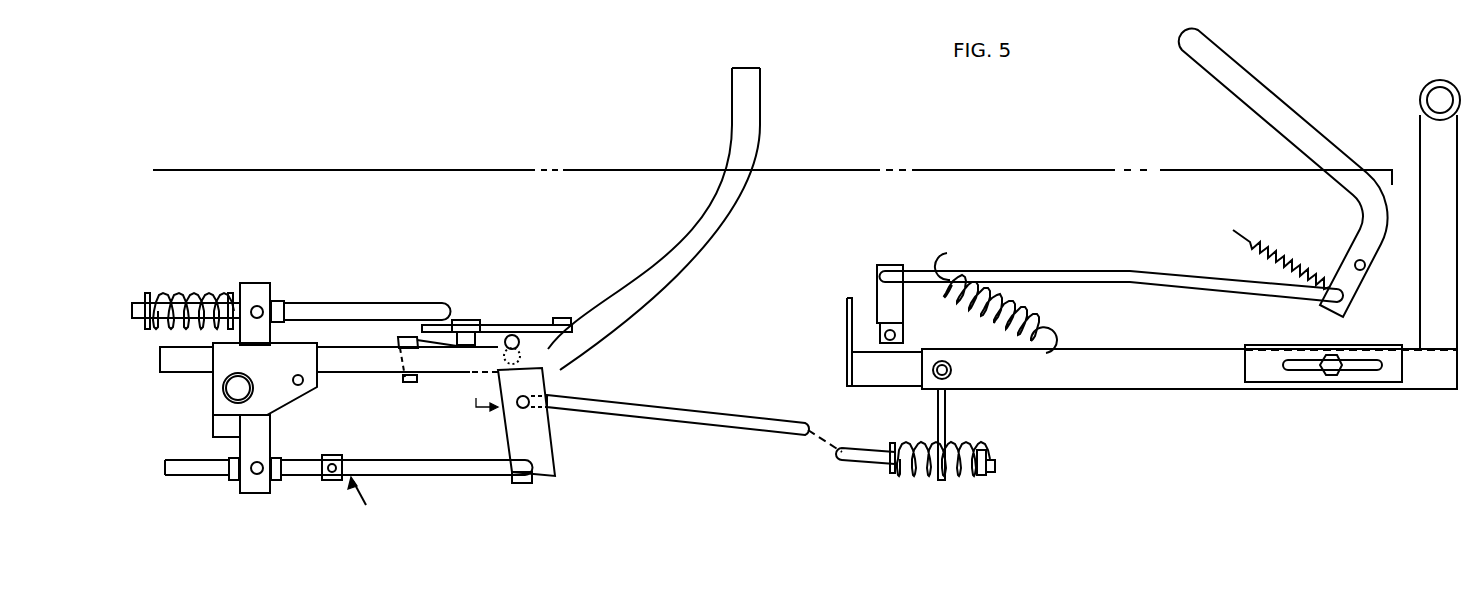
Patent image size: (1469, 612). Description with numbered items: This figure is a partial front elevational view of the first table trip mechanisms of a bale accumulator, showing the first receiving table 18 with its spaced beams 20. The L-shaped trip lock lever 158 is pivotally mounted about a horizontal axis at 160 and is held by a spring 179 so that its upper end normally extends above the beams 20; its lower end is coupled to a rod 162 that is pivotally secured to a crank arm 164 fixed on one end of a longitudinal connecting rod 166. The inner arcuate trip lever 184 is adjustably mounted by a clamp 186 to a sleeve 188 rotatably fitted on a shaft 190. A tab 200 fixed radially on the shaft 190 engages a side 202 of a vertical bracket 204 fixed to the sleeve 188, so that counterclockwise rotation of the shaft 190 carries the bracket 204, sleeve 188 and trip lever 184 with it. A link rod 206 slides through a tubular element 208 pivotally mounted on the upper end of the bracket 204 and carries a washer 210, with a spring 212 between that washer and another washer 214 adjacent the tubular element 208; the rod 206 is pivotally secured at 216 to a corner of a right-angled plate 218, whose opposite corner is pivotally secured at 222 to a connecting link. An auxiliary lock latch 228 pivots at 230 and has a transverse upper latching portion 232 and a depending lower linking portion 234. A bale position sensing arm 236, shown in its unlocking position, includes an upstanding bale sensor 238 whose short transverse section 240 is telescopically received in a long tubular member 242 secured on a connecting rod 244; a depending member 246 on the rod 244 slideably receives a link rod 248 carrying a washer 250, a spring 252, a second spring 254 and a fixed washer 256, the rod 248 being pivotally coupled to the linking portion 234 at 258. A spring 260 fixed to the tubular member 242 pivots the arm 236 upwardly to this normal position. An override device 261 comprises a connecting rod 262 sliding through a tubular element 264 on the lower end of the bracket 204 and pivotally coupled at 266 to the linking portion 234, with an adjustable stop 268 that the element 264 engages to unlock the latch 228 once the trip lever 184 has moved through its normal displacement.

The first receiving table 18 is at (947, 166).
The transversely extending spaced beams 20 is at (1121, 170).
The L-shaped trip lock lever 158 is at (1278, 93).
The horizontal pivot axis 160 is at (1364, 269).
The rod 162 is at (1137, 272).
The crank arm 164 is at (896, 262).
The longitudinal connecting rod 166 is at (903, 335).
The spring 179 is at (1298, 258).
The inner arcuate-shaped trip lever 184 is at (746, 143).
The clamp 186 is at (290, 398).
The sleeve 188 is at (256, 386).
The shaft 190 is at (222, 386).
The tab 200 is at (217, 423).
The side of vertical bracket 202 is at (243, 447).
The vertical bracket 204 is at (268, 285).
The link rod 206 is at (383, 303).
The tubular element 208 is at (285, 303).
The washer 210 is at (147, 298).
The spring 212 is at (165, 328).
The washer 214 is at (229, 296).
The pivotal connection 216 is at (463, 316).
The right-angled plate 218 is at (510, 325).
The pivotal connection 222 is at (576, 303).
The auxiliary lock latch 228 is at (481, 393).
The pivot mounting 230 is at (522, 355).
The transverse upper latching portion 232 is at (413, 382).
The depending lower linking portion 234 is at (545, 440).
The bale position sensing arm 236 is at (1415, 145).
The upstanding bale sensor 238 is at (1450, 81).
The short lower transverse section 240 is at (1313, 388).
The long transverse tubular member 242 is at (1129, 390).
The connecting rod 244 is at (952, 370).
The depending member 246 is at (946, 406).
The link rod 248 is at (865, 447).
The washer 250 is at (992, 476).
The spring 252 is at (956, 477).
The spring 254 is at (915, 482).
The washer 256 is at (891, 480).
The pivotal coupling 258 is at (532, 398).
The spring 260 is at (1048, 323).
The override device 261 is at (366, 504).
The connecting rod 262 is at (436, 468).
The tubular element 264 is at (284, 472).
The pivotal coupling 266 is at (530, 483).
The adjustable stop 268 is at (335, 455).